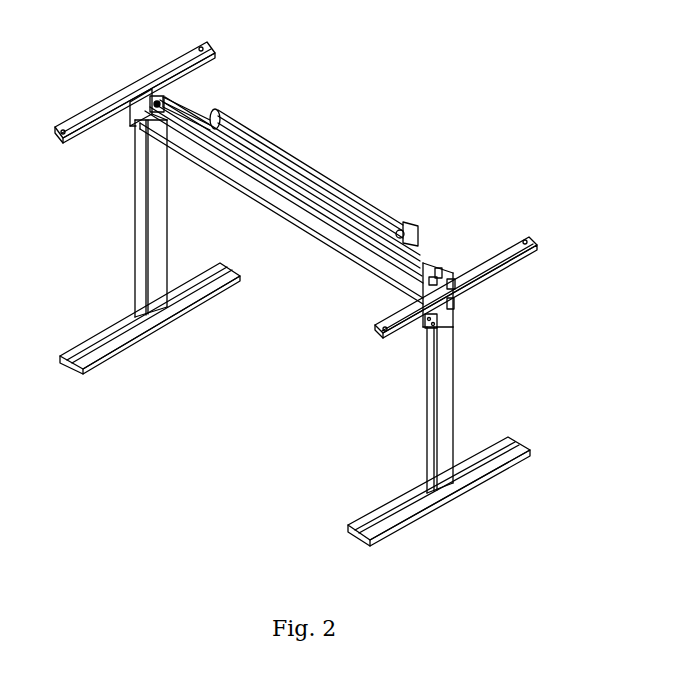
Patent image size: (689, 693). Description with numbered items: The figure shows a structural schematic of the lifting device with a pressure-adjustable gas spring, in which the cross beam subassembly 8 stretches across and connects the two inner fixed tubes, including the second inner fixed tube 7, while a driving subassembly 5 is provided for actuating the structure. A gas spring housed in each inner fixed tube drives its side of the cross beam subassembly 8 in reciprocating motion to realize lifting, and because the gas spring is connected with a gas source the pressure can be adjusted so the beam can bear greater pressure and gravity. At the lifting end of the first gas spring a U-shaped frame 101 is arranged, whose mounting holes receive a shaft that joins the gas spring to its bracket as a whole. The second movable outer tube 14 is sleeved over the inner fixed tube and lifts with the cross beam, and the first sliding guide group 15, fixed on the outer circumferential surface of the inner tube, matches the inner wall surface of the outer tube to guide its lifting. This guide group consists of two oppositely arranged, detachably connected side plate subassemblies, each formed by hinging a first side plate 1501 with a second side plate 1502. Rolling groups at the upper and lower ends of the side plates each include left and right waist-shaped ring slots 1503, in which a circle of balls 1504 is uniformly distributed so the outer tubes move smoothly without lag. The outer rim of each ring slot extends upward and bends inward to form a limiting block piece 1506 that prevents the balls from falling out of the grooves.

The driving subassembly 5 is at (445, 412).
The second inner fixed tube 7 is at (170, 306).
The cross beam subassembly 8 is at (399, 222).
The second movable outer tube 14 is at (157, 268).
The first sliding guide group 15 is at (437, 304).
The U-shaped frame 101 is at (448, 276).
The first side plate 1501 is at (453, 306).
The second side plate 1502 is at (438, 275).
The ring slot 1503 is at (436, 281).
The ball 1504 is at (424, 319).
The limiting block piece 1506 is at (454, 284).